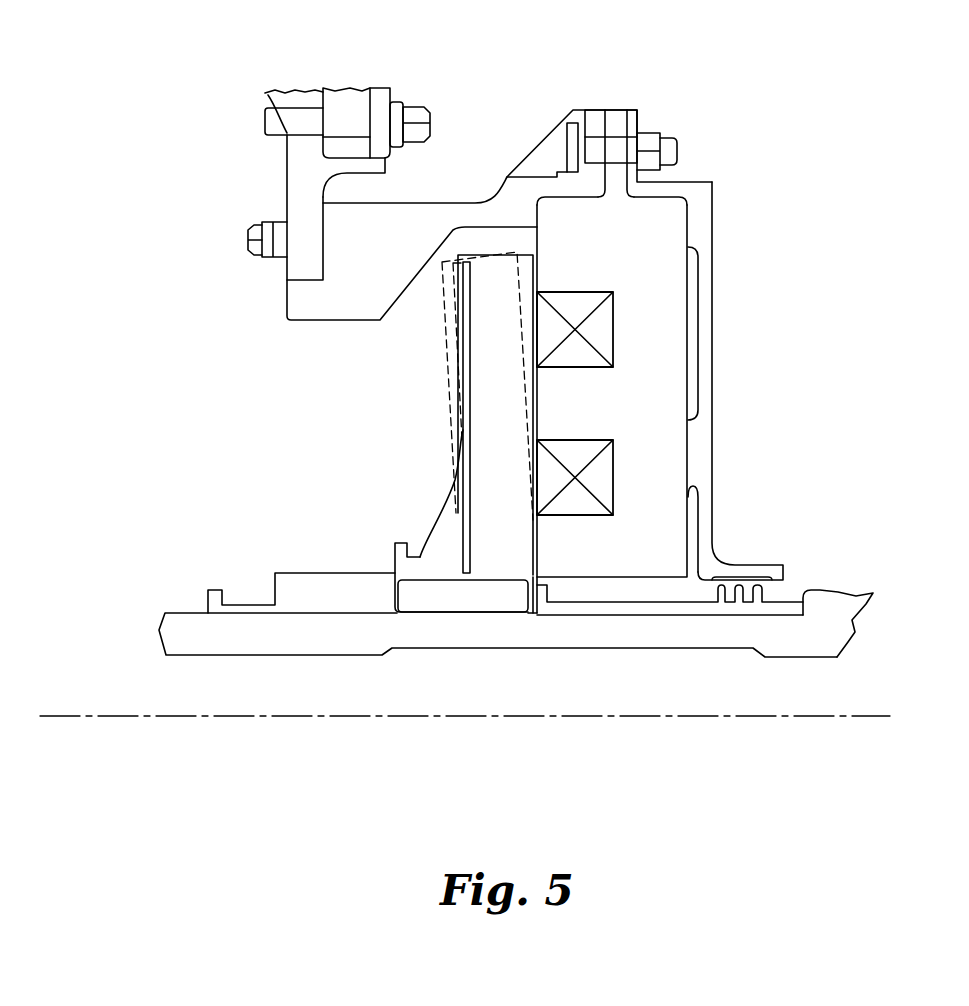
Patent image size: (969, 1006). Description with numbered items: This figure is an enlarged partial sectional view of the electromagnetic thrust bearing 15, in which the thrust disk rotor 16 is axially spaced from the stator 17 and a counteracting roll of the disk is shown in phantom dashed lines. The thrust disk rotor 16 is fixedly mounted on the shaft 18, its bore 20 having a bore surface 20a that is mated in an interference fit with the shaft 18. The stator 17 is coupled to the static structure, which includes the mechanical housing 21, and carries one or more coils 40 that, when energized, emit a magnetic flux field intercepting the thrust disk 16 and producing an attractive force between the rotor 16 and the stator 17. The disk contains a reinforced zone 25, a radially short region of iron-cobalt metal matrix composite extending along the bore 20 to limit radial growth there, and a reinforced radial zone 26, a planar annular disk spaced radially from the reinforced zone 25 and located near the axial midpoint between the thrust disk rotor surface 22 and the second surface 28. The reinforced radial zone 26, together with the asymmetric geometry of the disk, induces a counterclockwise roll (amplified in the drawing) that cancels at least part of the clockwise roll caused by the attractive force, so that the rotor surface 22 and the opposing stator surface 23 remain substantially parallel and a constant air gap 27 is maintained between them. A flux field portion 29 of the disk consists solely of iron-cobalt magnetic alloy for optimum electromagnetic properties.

The electromagnetic thrust bearing 15 is at (758, 322).
The thrust disk rotor 16 is at (447, 540).
The stator 17 is at (640, 380).
The shaft 18 is at (820, 612).
The bore 20 is at (428, 617).
The bore surface 20a is at (470, 617).
The mechanical housing 21 is at (297, 98).
The thrust disk rotor surface 22 is at (537, 265).
The stator surface 23 is at (530, 300).
The reinforced zone 25 is at (512, 598).
The reinforced radial zone 26 is at (463, 508).
The air gap 27 is at (537, 258).
The second surface 28 is at (397, 553).
The flux field portion 29 is at (498, 403).
The coils 40 is at (600, 320).